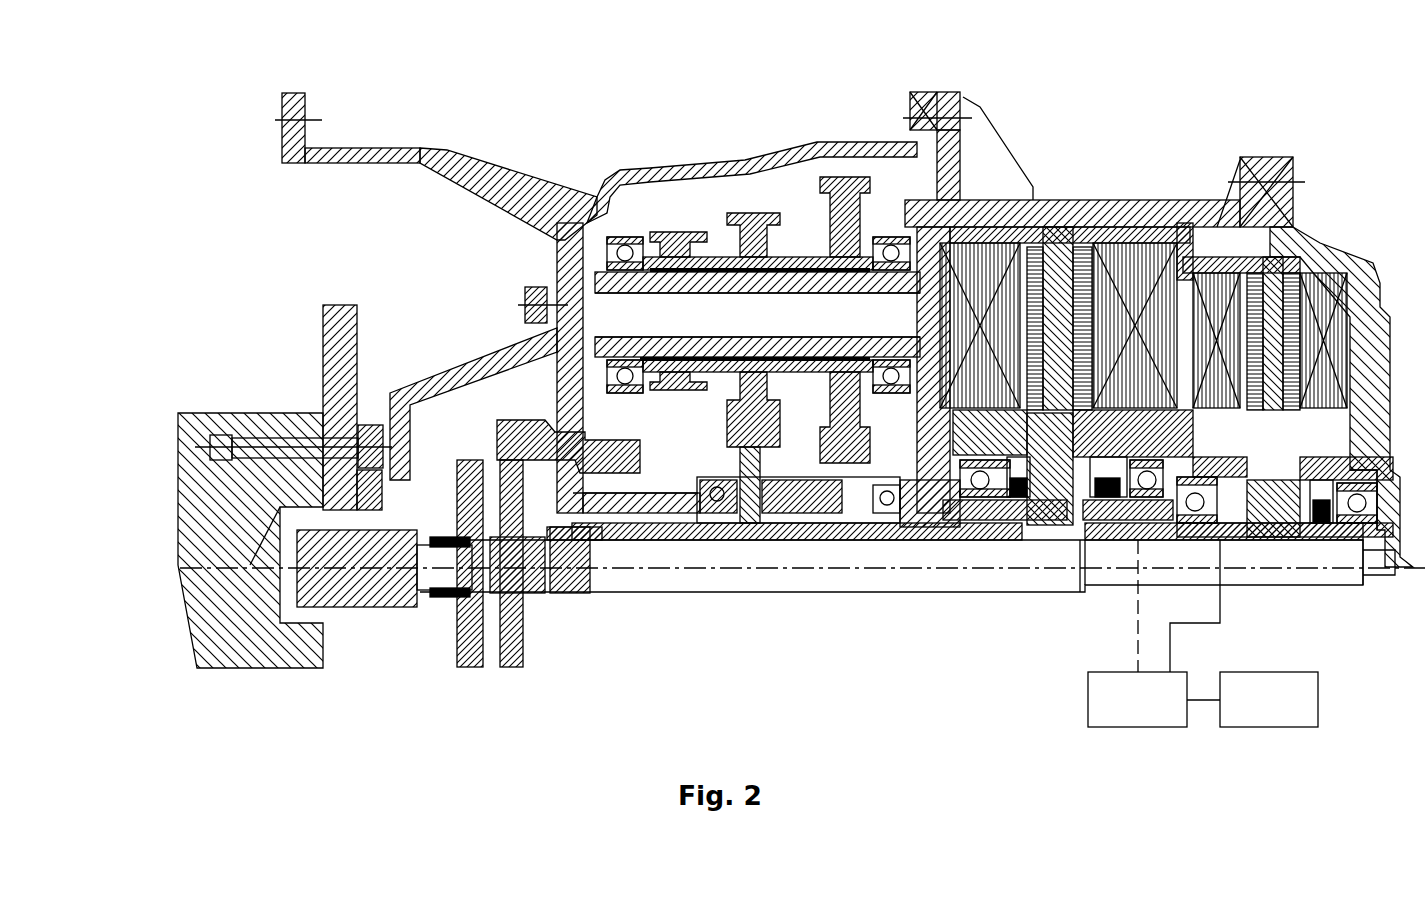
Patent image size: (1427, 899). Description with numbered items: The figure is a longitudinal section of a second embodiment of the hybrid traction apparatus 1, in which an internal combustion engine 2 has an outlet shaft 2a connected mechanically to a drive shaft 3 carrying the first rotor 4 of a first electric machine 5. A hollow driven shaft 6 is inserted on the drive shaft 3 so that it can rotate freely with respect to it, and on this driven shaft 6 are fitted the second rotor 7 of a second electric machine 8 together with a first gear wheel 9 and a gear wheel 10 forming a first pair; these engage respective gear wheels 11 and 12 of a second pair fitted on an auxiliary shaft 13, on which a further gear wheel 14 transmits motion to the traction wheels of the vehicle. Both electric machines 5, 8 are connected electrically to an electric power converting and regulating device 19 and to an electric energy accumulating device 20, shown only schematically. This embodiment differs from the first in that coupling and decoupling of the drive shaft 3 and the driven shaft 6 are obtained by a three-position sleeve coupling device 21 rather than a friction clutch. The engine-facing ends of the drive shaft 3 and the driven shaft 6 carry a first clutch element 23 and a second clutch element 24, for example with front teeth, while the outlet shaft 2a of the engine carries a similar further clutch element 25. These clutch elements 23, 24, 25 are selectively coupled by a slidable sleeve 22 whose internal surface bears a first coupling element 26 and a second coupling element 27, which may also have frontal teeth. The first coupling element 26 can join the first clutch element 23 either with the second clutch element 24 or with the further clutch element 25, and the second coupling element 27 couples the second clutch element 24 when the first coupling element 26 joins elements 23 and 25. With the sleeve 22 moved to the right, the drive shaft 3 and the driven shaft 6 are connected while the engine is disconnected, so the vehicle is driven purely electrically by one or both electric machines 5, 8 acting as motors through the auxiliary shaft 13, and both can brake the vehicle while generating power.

The hybrid traction apparatus 1 is at (927, 700).
The internal combustion engine 2 is at (42, 564).
The outlet shaft of the internal combustion engine 2a is at (377, 583).
The drive shaft 3 is at (1010, 575).
The first rotor 4 is at (1283, 537).
The first electric machine 5 is at (1325, 273).
The hollow driven shaft 6 is at (727, 540).
The second rotor 7 is at (1062, 577).
The second electric machine 8 is at (1122, 245).
The first gear wheel 9 is at (760, 540).
The gear wheel of the first pair 10 is at (870, 540).
The gear wheel 11 is at (753, 250).
The gear wheel of the second pair 12 is at (845, 265).
The auxiliary shaft 13 is at (650, 345).
The further gear wheel 14 is at (677, 237).
The electric power converting and regulating device 19 is at (1154, 633).
The electric energy accumulating device 20 is at (1252, 699).
The three-position sleeve coupling device 21 is at (477, 423).
The slidable sleeve 22 is at (507, 420).
The first clutch element 23 is at (552, 463).
The second clutch element 24 is at (607, 540).
The further clutch element 25 is at (440, 530).
The first coupling element 26 is at (650, 463).
The second coupling element 27 is at (687, 540).